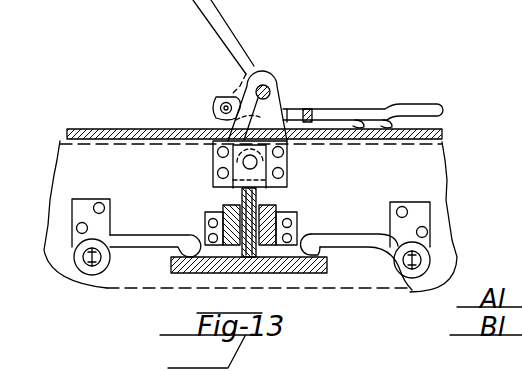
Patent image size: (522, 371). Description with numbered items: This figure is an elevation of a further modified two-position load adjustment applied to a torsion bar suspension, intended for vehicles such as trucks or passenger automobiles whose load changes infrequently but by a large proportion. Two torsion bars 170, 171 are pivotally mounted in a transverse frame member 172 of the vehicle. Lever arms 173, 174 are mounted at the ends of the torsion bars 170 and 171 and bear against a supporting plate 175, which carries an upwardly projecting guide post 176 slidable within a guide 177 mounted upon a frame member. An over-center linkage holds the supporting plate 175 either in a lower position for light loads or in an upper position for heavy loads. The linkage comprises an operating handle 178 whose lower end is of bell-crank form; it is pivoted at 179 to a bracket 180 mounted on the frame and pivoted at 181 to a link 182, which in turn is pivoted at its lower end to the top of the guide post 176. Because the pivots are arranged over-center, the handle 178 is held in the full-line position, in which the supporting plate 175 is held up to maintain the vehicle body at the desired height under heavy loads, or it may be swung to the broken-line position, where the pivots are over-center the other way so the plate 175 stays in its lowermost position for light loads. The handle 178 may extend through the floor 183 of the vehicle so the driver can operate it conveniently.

The torsion bar 170 is at (420, 260).
The torsion bar 171 is at (90, 260).
The transverse frame member 172 is at (428, 176).
The lever arm 173 is at (367, 243).
The lever arm 174 is at (145, 240).
The supporting plate 175 is at (317, 272).
The guide post 176 is at (252, 198).
The guide 177 is at (213, 210).
The operating handle 178 is at (340, 108).
The pivot 179 is at (222, 98).
The bracket 180 is at (215, 117).
The pivot 181 is at (265, 86).
The link 182 is at (278, 110).
The floor 183 is at (117, 98).